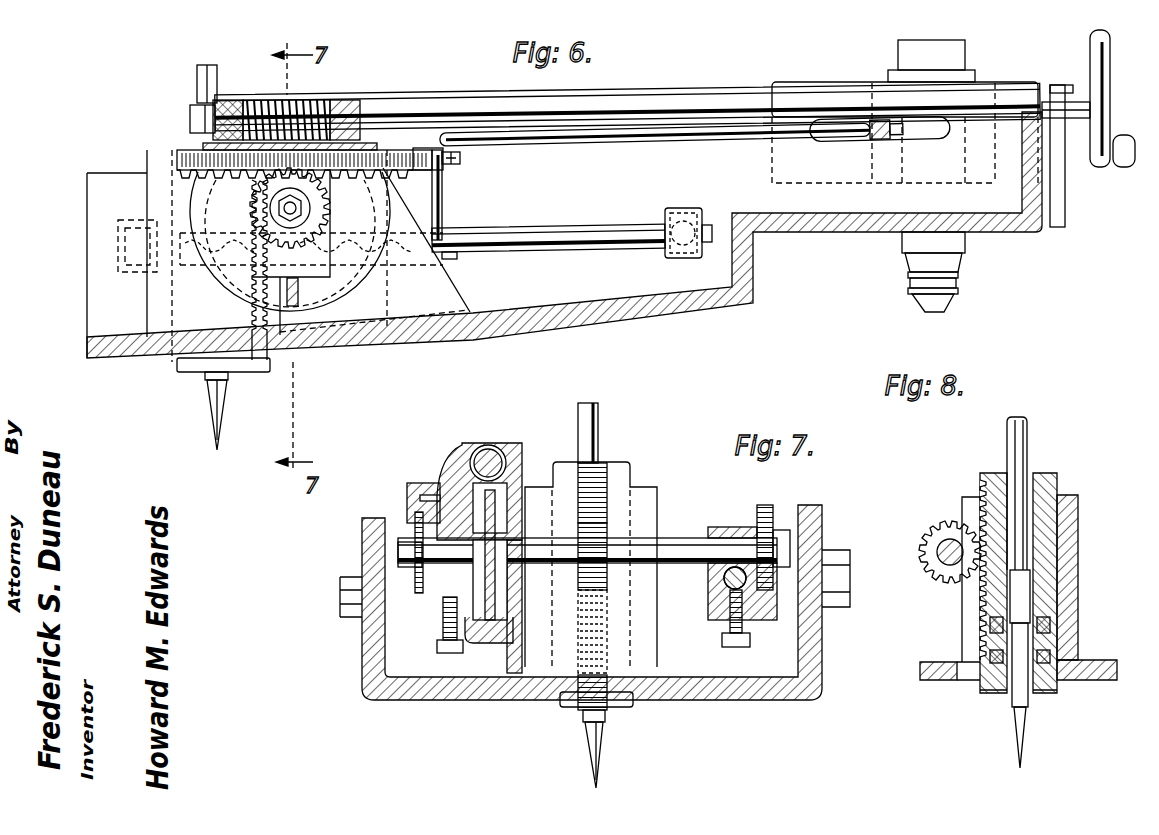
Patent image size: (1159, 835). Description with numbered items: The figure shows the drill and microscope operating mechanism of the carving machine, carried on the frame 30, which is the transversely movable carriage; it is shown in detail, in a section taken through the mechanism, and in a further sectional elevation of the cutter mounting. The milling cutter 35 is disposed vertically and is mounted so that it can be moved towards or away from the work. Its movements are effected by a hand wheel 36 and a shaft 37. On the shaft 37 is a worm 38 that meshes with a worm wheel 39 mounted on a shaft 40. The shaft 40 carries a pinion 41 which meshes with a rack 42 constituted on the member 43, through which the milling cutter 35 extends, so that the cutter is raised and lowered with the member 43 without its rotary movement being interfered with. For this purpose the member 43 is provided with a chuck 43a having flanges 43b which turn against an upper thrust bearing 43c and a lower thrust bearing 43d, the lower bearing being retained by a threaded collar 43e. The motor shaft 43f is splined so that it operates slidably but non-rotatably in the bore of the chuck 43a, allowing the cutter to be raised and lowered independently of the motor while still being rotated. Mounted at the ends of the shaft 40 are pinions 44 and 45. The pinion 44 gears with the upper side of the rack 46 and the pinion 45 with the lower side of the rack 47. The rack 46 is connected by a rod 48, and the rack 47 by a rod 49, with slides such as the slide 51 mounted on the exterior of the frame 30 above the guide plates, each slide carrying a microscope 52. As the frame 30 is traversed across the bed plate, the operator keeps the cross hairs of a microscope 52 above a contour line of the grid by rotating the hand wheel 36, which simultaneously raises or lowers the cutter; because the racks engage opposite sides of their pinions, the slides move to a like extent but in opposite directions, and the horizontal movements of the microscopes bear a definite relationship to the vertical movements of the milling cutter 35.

In FIG. 6, the frame 30 is at (564, 237).
In FIG. 7, the frame 30 is at (595, 602).
In FIG. 8, the frame 30 is at (1073, 635).
In FIG. 6, the milling cutter 35 is at (208, 403).
In FIG. 7, the milling cutter 35 is at (600, 748).
In FIG. 8, the milling cutter 35 is at (1014, 718).
In FIG. 6, the hand wheel 36 is at (1104, 168).
In FIG. 6, the shaft 37 is at (458, 112).
In FIG. 7, the shaft 37 is at (492, 453).
In FIG. 6, the worm 38 is at (297, 102).
In FIG. 7, the worm 38 is at (477, 446).
In FIG. 6, the worm wheel 39 is at (318, 100).
In FIG. 7, the worm wheel 39 is at (492, 625).
In FIG. 6, the shaft 40 is at (297, 209).
In FIG. 7, the shaft 40 is at (688, 537).
In FIG. 8, the shaft 40 is at (940, 564).
In FIG. 7, the pinion 41 is at (597, 533).
In FIG. 8, the pinion 41 is at (933, 519).
In FIG. 6, the rack 42 is at (258, 368).
In FIG. 7, the rack 42 is at (594, 481).
In FIG. 8, the rack 42 is at (983, 487).
In FIG. 6, the member 43 is at (190, 362).
In FIG. 7, the member 43 is at (607, 467).
In FIG. 8, the member 43 is at (1058, 478).
In FIG. 8, the chuck 43a is at (1033, 558).
In FIG. 8, the flanges 43b is at (1052, 645).
In FIG. 8, the upper thrust bearing 43c is at (1058, 612).
In FIG. 8, the lower thrust bearing 43d is at (1058, 674).
In FIG. 8, the threaded collar 43e is at (1040, 696).
In FIG. 8, the motor shaft 43f is at (1027, 432).
In FIG. 6, the pinion 44 is at (262, 205).
In FIG. 7, the pinion 44 is at (418, 580).
In FIG. 7, the pinion 45 is at (767, 507).
In FIG. 6, the rack 46 is at (183, 158).
In FIG. 7, the rack 46 is at (425, 499).
In FIG. 6, the rack 47 is at (426, 240).
In FIG. 7, the rack 47 is at (768, 607).
In FIG. 6, the rod 48 is at (598, 145).
In FIG. 6, the rod 49 is at (446, 207).
In FIG. 6, the slide 51 is at (822, 83).
In FIG. 6, the microscope 52 is at (953, 53).